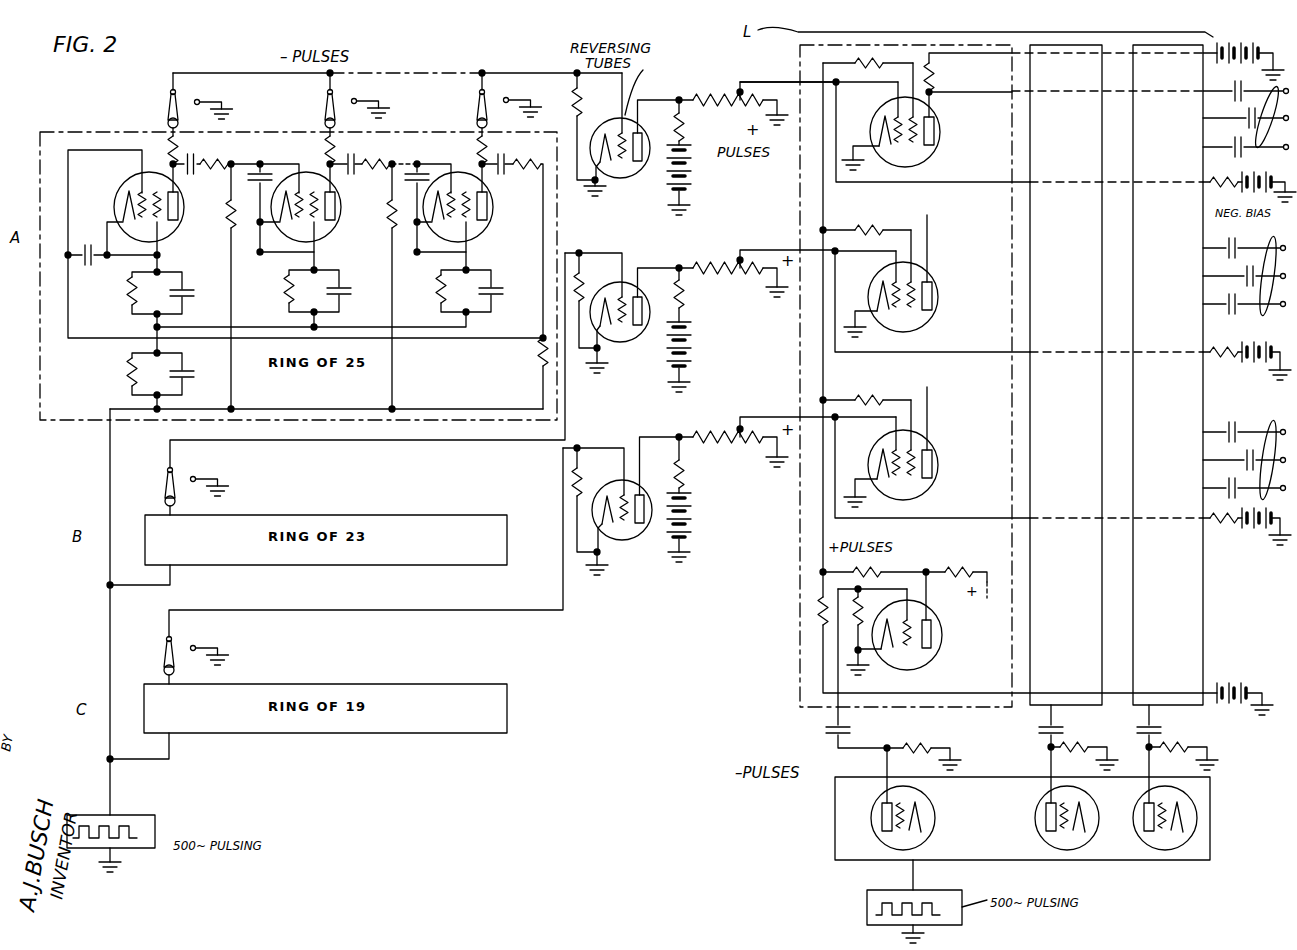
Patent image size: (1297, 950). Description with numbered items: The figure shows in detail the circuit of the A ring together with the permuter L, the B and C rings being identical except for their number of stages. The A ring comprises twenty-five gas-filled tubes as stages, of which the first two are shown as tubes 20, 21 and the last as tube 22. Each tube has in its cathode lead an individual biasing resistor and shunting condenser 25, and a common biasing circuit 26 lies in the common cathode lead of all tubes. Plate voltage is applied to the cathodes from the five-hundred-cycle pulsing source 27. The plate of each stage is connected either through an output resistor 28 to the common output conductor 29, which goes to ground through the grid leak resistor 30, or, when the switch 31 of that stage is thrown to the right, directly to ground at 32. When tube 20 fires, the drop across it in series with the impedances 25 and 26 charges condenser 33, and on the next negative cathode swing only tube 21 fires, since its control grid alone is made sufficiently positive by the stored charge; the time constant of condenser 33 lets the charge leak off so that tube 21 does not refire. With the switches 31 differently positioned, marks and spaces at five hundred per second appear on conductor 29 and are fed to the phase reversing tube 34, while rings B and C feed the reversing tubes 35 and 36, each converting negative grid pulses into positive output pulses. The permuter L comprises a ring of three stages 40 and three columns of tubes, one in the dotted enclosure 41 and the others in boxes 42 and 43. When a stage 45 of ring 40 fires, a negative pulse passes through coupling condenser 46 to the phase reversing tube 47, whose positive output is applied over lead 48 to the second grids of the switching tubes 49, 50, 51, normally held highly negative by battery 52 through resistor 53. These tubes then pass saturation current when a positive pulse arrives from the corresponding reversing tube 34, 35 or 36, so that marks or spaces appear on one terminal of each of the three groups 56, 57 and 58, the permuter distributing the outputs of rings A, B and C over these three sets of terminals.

The gas-filled tube 20 is at (126, 186).
The gas-filled tube 21 is at (301, 172).
The gas-filled tube 22 is at (488, 225).
The biasing resistor and shunting condenser 25 is at (134, 305).
The common biasing circuit 26 is at (132, 386).
The 500-cycle pulsing source 27 is at (155, 830).
The output resistor 28 is at (166, 143).
The common output conductor 29 is at (473, 72).
The grid leak resistor 30 is at (572, 106).
The switch 31 is at (170, 108).
The ground connection 32 is at (226, 106).
The condenser 33 is at (198, 160).
The phase reversing tube 34 is at (638, 170).
The phase reversing tube 35 is at (626, 290).
The phase reversing tube 36 is at (637, 470).
The ring of three stages 40 is at (835, 832).
The dotted line enclosure 41 is at (800, 58).
The box 42 is at (1100, 168).
The box 43 is at (1133, 225).
The stage 45 is at (871, 818).
The coupling condenser 46 is at (830, 727).
The phase reversing tube 47 is at (937, 654).
The lead 48 is at (823, 388).
The switching tube 49 is at (935, 158).
The switching tube 50 is at (938, 298).
The switching tube 51 is at (936, 474).
The battery 52 is at (1235, 683).
The resistor 53 is at (818, 602).
The group of output terminals 56 is at (1257, 148).
The group of output terminals 57 is at (1266, 305).
The group of output terminals 58 is at (1270, 425).